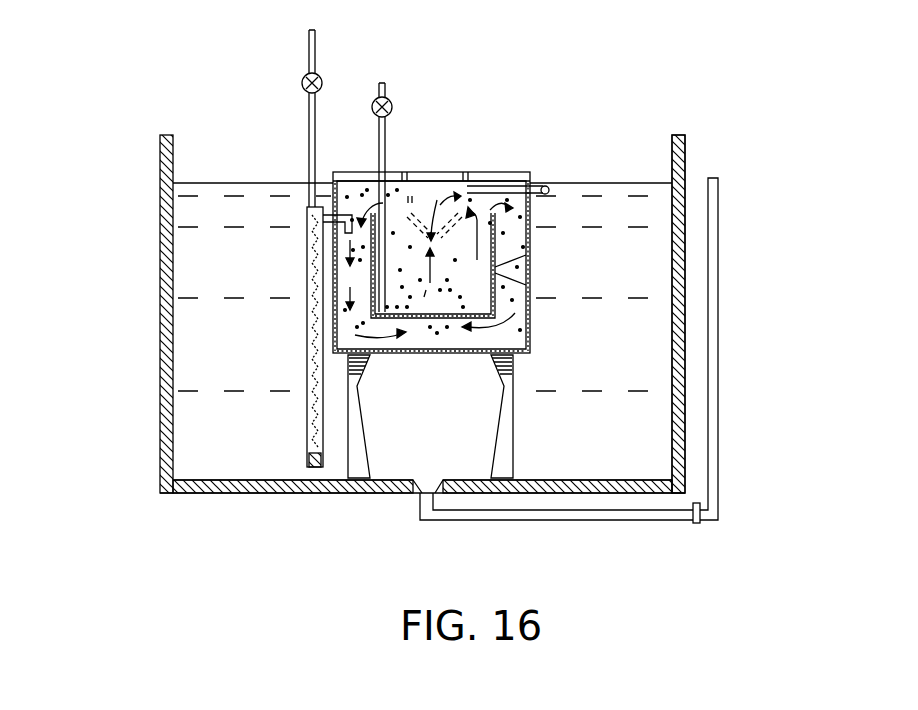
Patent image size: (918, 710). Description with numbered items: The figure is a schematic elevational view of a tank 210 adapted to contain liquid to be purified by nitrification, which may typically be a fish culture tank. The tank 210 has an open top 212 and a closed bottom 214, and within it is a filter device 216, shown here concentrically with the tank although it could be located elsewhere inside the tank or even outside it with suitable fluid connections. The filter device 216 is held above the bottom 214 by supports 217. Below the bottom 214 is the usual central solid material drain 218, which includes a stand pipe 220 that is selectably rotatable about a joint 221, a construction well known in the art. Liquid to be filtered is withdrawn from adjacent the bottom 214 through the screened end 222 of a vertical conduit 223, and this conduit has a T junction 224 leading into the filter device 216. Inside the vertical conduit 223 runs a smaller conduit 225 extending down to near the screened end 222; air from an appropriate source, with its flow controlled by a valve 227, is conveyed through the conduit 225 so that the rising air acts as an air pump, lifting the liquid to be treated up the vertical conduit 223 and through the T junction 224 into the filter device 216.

The tank 210 is at (160, 417).
The open top 212 is at (642, 135).
The closed bottom 214 is at (222, 493).
The filter device 216 is at (508, 150).
The supports 217 is at (493, 446).
The central solid material drain 218 is at (417, 497).
The stand pipe 220 is at (722, 340).
The joint 221 is at (700, 523).
The screened end 222 is at (315, 483).
The vertical conduit 223 is at (308, 328).
The T junction 224 is at (310, 220).
The conduit 225 is at (307, 108).
The valve 227 is at (318, 80).